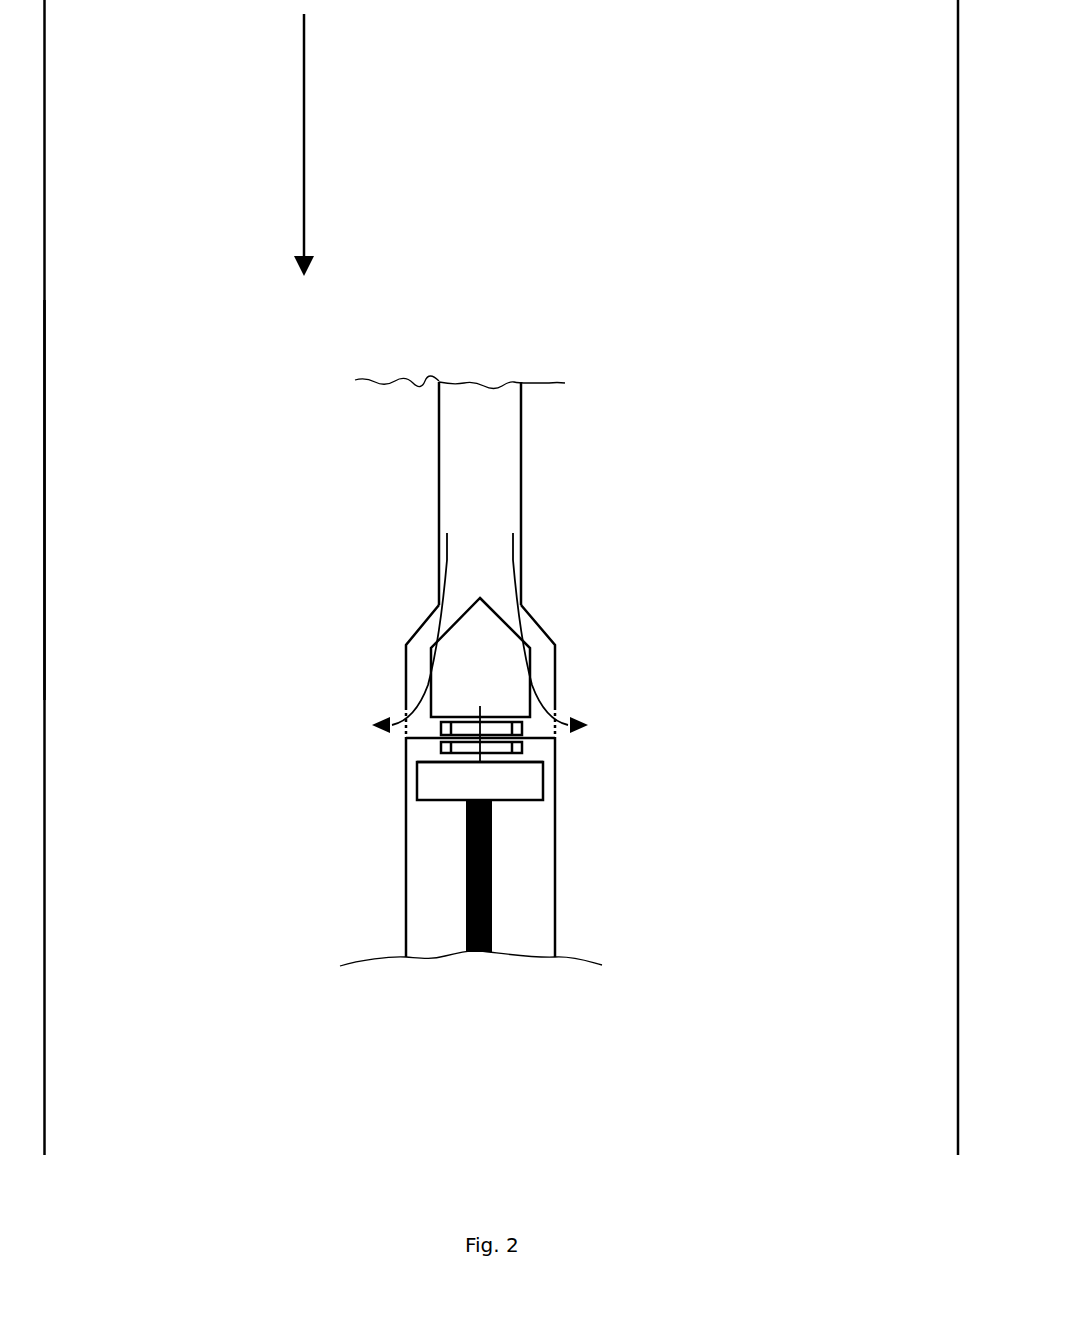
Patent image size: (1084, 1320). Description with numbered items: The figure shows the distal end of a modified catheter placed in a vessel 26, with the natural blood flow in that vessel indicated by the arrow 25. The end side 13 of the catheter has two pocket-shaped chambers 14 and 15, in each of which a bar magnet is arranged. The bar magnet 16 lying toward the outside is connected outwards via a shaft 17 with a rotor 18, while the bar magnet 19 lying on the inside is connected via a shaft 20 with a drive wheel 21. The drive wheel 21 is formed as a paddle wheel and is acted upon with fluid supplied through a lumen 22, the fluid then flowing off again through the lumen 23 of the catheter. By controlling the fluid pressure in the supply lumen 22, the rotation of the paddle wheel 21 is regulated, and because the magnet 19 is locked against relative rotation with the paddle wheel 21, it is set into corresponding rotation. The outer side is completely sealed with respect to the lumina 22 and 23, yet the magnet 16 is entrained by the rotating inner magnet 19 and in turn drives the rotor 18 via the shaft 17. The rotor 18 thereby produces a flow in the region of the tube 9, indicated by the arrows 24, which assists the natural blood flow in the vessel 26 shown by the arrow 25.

The tube 9 is at (523, 493).
The end side 13 is at (624, 723).
The pocket-shaped chamber 14 is at (422, 637).
The pocket-shaped chamber 15 is at (422, 750).
The bar magnet 16 is at (502, 727).
The shaft 17 is at (477, 713).
The rotor 18 is at (488, 670).
The bar magnet 19 is at (463, 755).
The shaft 20 is at (482, 758).
The drive wheel 21 is at (522, 775).
The lumen 22 is at (528, 862).
The lumen 23 is at (433, 912).
The arrows 24 is at (507, 555).
The arrow 25 is at (302, 145).
The vessel 26 is at (48, 500).